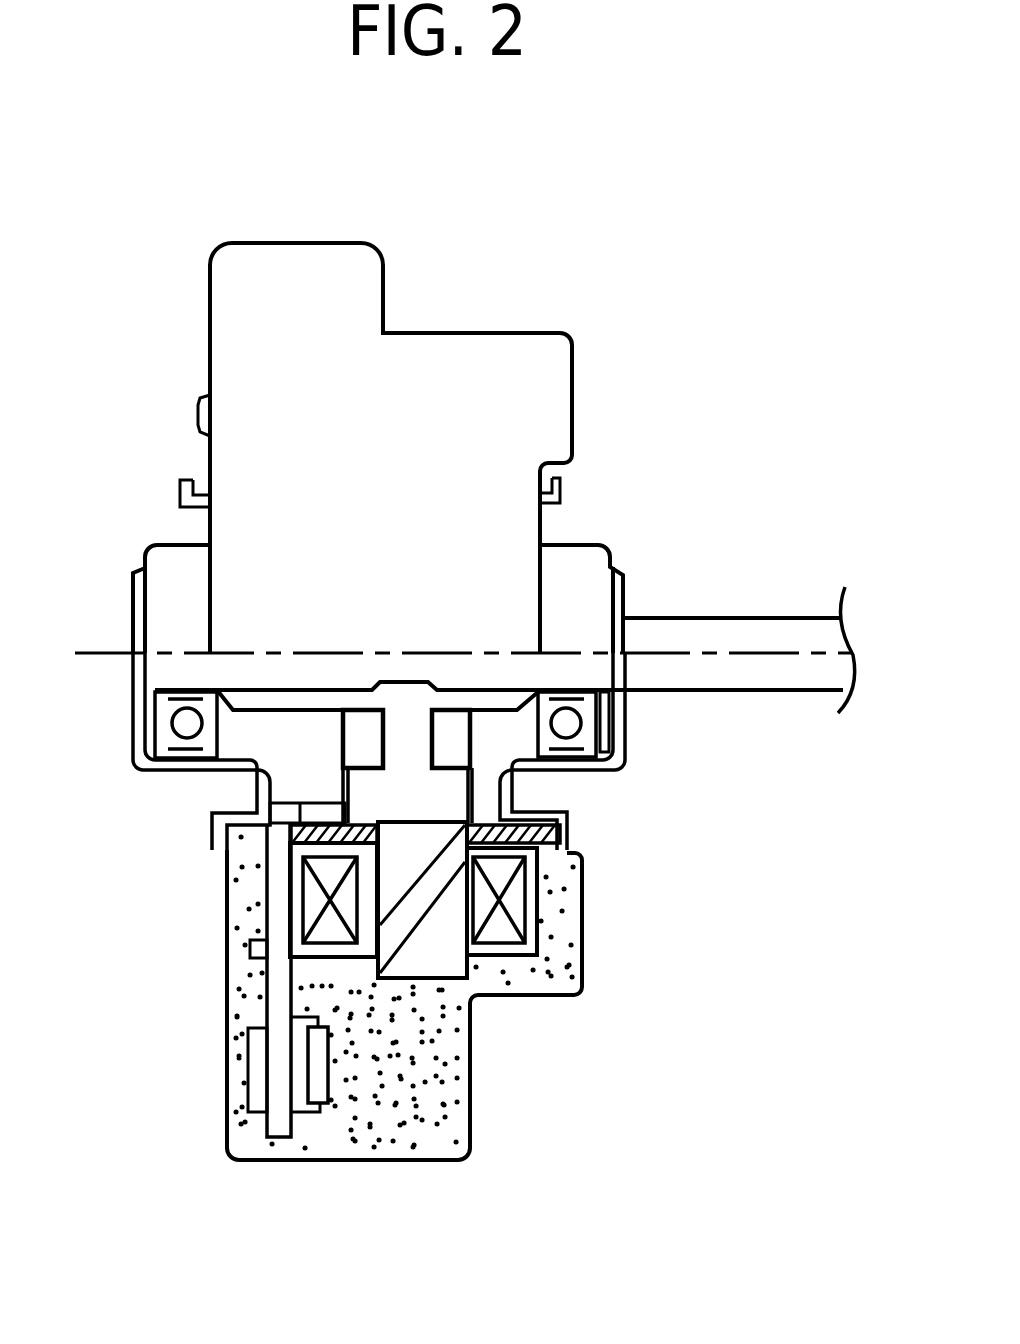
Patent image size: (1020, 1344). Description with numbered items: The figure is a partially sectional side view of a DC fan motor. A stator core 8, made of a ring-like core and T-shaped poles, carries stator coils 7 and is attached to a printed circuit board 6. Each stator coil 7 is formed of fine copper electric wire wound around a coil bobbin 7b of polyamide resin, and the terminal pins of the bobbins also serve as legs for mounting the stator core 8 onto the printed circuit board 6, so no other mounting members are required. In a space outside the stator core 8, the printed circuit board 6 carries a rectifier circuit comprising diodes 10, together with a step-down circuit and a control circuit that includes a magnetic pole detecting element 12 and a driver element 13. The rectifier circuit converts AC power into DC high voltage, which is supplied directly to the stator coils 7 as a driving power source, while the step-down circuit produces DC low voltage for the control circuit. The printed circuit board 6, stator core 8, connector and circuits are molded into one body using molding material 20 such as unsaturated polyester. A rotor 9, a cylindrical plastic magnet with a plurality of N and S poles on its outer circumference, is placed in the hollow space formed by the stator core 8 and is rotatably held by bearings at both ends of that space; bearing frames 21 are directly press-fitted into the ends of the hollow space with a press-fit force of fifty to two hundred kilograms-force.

The printed circuit board 6 is at (280, 1118).
The stator coils 7 is at (512, 900).
The coil bobbin 7b is at (540, 947).
The stator core 8 is at (448, 960).
The rotor 9 is at (440, 787).
The diodes 10 is at (317, 1078).
The magnetic pole detecting element 12 is at (317, 817).
The driver element 13 is at (257, 1063).
The molding material 20 is at (455, 1082).
The bearing frames 21 is at (619, 722).